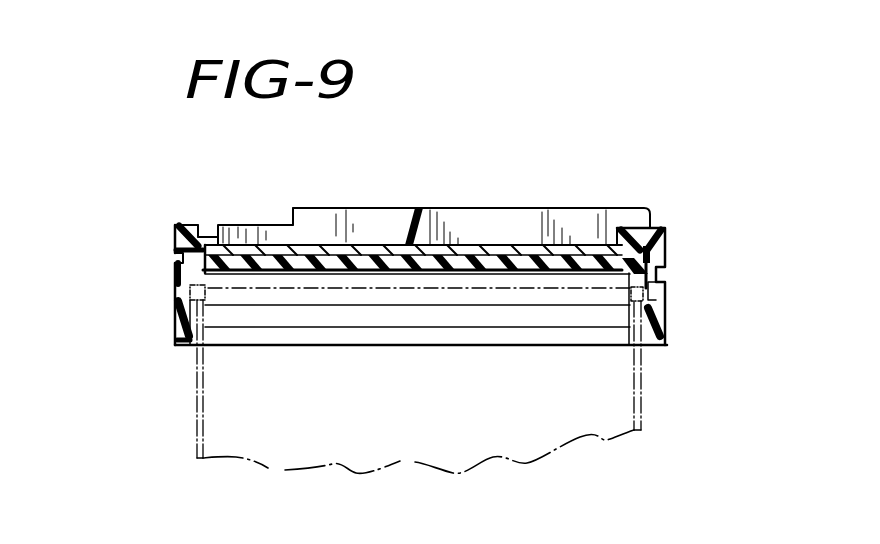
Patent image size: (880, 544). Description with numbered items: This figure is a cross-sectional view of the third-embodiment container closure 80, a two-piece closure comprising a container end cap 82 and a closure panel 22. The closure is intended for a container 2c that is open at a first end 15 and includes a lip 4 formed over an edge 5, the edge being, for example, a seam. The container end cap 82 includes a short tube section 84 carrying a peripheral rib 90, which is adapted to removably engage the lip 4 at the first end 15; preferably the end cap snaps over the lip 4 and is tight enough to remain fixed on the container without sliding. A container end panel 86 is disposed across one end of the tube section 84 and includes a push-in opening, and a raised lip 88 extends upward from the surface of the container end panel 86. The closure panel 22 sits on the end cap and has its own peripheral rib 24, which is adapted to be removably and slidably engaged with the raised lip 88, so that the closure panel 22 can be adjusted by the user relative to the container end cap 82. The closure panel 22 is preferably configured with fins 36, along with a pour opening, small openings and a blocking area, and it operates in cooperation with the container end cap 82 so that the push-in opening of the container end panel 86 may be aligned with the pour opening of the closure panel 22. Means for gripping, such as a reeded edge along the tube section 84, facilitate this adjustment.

The container closure 80 is at (645, 188).
The fins 36 is at (528, 225).
The raised lip 88 is at (200, 230).
The peripheral rib 24 is at (174, 263).
The closure panel 22 is at (668, 238).
The container end cap 82 is at (667, 300).
The container end panel 86 is at (296, 273).
The first end 15 is at (403, 283).
The tube section 84 is at (189, 297).
The peripheral rib 90 is at (228, 318).
The lip 4 is at (631, 290).
The edge 5 is at (638, 300).
The container 2c is at (197, 445).